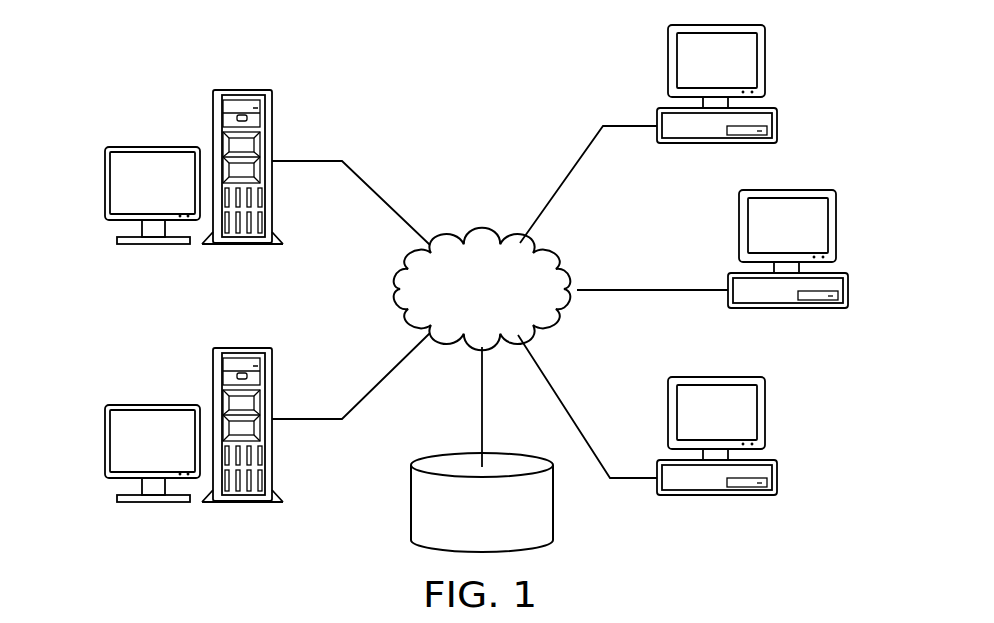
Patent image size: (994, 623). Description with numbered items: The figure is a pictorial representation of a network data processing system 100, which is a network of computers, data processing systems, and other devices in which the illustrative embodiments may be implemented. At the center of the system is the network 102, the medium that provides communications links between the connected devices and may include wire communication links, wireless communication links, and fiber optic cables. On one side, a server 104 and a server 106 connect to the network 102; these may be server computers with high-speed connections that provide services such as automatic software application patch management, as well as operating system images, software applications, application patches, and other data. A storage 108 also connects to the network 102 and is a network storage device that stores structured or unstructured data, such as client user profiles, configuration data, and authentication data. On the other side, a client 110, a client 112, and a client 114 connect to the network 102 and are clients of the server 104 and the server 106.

The network data processing system 100 is at (347, 69).
The network 102 is at (455, 241).
The server 104 is at (105, 186).
The server 106 is at (105, 442).
The storage 108 is at (410, 500).
The client 110 is at (777, 117).
The client 112 is at (847, 300).
The client 114 is at (777, 487).